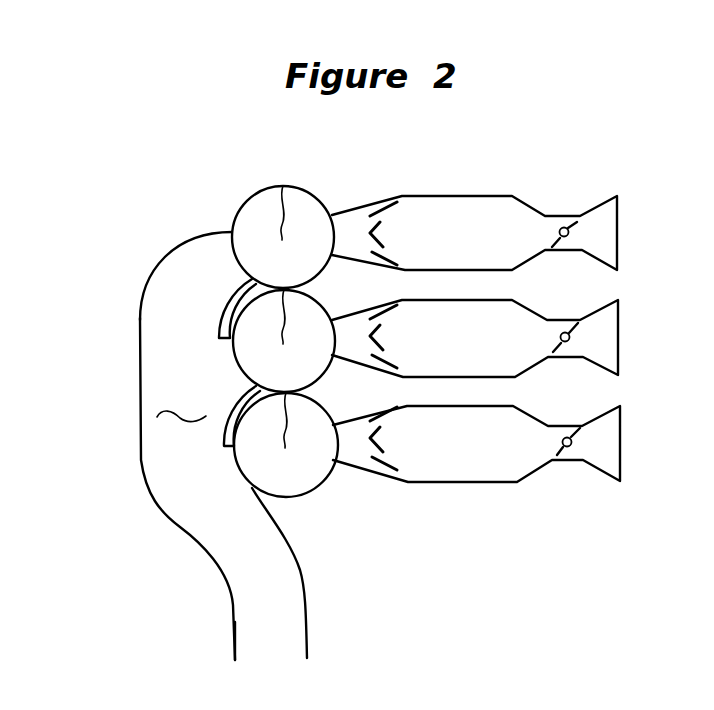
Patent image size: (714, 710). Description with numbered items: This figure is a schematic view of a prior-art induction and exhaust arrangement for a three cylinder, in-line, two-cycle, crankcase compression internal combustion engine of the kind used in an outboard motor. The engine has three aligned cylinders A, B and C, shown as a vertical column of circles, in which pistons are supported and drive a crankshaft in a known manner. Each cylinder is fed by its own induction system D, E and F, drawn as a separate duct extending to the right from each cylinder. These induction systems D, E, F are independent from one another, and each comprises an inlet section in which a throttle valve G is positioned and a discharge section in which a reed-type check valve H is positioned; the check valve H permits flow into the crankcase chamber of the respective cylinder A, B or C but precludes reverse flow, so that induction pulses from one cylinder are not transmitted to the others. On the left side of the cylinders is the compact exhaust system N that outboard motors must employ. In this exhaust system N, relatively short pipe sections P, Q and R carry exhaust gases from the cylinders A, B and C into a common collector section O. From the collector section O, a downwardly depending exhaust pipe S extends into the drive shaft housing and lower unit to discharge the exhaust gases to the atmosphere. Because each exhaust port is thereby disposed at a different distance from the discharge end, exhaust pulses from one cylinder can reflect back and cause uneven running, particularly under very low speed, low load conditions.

The cylinder A is at (283, 237).
The cylinder B is at (284, 341).
The cylinder C is at (286, 445).
The induction system D is at (450, 195).
The induction system E is at (475, 298).
The induction system F is at (473, 403).
The throttle valve G is at (574, 223).
The reed-type check valve H is at (383, 205).
The exhaust system N is at (136, 380).
The common collector section O is at (181, 403).
The pipe section P is at (230, 288).
The pipe section Q is at (232, 343).
The pipe section R is at (232, 466).
The exhaust pipe S is at (232, 622).